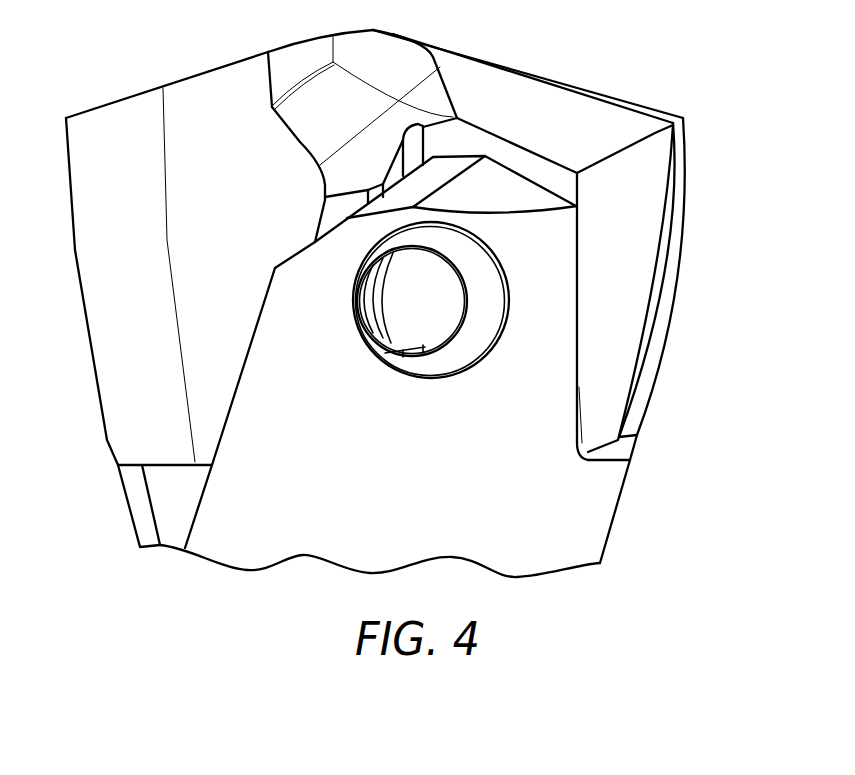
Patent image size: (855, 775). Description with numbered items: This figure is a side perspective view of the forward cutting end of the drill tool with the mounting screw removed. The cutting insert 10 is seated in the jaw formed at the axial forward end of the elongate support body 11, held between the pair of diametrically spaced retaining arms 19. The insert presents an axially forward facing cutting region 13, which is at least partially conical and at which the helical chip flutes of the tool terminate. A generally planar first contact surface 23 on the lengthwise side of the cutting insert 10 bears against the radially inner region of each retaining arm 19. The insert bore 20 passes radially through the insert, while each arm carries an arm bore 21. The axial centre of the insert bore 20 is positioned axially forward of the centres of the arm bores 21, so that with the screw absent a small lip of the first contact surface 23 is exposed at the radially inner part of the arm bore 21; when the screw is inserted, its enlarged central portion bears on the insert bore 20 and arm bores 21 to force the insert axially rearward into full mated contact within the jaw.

The cutting insert 10 is at (694, 255).
The support body 11 is at (644, 518).
The cutting region 13 is at (520, 72).
The retaining arm 19 is at (558, 317).
The insert bore 20 is at (442, 312).
The arm bore 21 is at (378, 360).
The first contact surface 23 is at (438, 347).